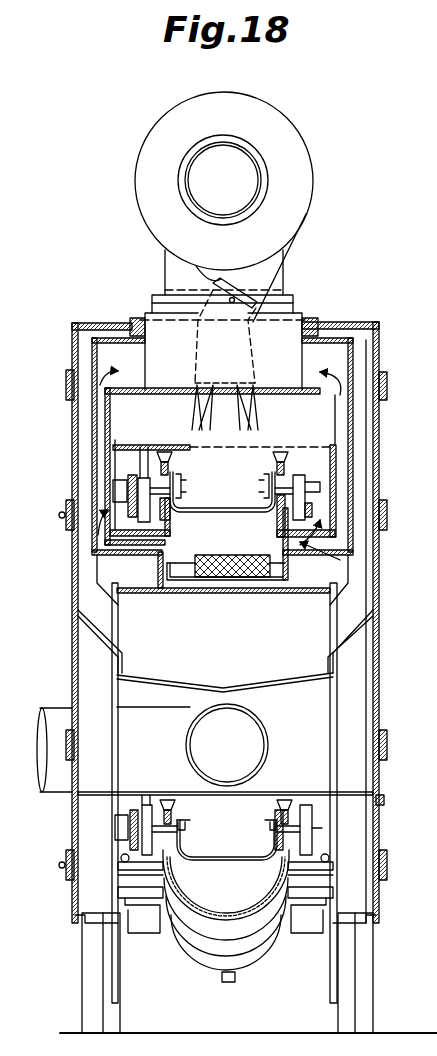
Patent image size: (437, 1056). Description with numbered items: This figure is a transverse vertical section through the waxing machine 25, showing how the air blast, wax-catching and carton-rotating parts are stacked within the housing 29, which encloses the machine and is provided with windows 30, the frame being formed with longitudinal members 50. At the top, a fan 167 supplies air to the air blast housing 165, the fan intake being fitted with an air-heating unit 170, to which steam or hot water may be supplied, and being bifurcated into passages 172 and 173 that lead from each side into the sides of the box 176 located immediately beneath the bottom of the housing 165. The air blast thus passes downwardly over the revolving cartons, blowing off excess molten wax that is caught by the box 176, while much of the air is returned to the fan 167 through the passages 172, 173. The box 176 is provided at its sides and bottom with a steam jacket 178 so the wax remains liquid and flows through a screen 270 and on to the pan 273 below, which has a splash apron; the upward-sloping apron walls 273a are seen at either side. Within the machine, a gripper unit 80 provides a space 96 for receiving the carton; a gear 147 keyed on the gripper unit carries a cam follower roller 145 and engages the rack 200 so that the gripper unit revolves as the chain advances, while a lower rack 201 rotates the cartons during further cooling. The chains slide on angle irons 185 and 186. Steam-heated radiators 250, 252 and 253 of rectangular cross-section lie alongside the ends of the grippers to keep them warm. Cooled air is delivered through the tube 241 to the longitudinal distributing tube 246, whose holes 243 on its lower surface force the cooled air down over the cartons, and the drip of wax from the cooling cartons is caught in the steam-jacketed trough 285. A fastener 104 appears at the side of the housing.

The fan 167 is at (289, 165).
The air-heating unit 170 is at (150, 314).
The housing 165 is at (225, 361).
The housing 29 is at (325, 324).
The windows 30 is at (385, 450).
The passage 173 is at (118, 358).
The passage 172 is at (330, 368).
The angle iron 186 is at (128, 558).
The radiator 250 is at (176, 442).
The gear 147 is at (133, 475).
The cam follower roller 145 is at (130, 480).
The rack 200 is at (128, 512).
The space 96 is at (230, 502).
The angle iron 185 is at (312, 503).
The steam jacket 178 is at (188, 578).
The screen 270 is at (226, 577).
The box 176 is at (272, 575).
The longitudinal members 50 is at (122, 606).
The chute side wall 273a is at (362, 612).
The pan 273 is at (212, 677).
The tube 241 is at (184, 735).
The longitudinal distributing tube 246 is at (265, 735).
The holes 243 is at (210, 796).
The rack 201 is at (138, 792).
The radiator 253 is at (298, 792).
The gripper unit 80 is at (210, 863).
The trough 285 is at (205, 918).
The radiator 252 is at (96, 903).
The waxing machine 25 is at (380, 695).
The fastener 104 is at (380, 800).